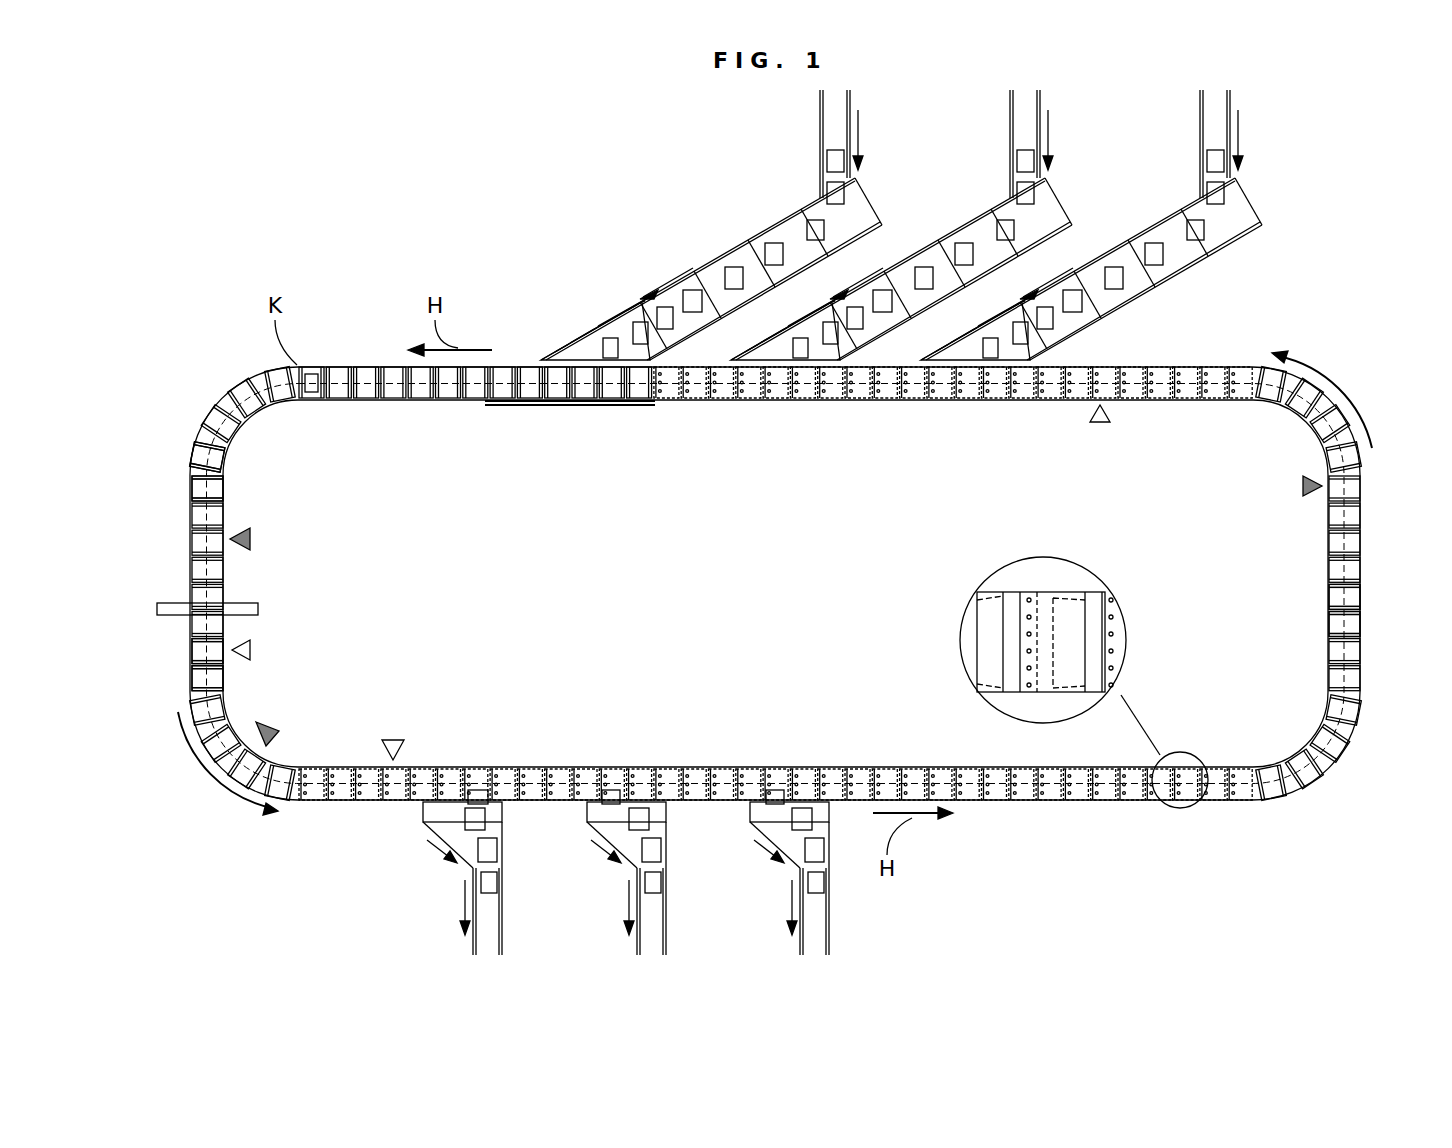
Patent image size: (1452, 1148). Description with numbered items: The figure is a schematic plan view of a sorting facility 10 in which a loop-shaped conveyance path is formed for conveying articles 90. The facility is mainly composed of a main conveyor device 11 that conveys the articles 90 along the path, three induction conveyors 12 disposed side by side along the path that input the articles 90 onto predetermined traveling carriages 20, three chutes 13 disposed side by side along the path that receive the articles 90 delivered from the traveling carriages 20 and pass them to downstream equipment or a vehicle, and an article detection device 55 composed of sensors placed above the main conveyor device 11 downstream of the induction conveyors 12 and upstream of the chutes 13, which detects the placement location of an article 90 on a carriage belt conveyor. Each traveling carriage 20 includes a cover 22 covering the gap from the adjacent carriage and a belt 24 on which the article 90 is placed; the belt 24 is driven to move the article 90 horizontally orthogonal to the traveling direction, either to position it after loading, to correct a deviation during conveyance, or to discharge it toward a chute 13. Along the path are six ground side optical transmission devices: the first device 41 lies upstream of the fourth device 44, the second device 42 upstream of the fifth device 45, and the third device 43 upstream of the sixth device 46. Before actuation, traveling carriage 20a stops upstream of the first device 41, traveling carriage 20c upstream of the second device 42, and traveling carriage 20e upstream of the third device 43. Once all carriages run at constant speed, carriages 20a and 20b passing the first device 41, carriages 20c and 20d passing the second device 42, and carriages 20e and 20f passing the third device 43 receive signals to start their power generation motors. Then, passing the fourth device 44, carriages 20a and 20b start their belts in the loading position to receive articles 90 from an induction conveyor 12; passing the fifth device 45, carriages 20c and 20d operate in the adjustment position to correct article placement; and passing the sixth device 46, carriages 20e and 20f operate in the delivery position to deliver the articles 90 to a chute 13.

The sorting facility 10 is at (257, 245).
The main conveyor device 11 is at (1052, 804).
The induction conveyor 12 is at (788, 200).
The chute 13 is at (462, 868).
The traveling carriage 20 is at (222, 392).
The traveling carriage 20a is at (1362, 598).
The traveling carriage 20b is at (1365, 630).
The traveling carriage 20c is at (193, 456).
The traveling carriage 20d is at (196, 420).
The traveling carriage 20e is at (190, 685).
The traveling carriage 20f is at (190, 650).
The cover 22 is at (1010, 600).
The belt 24 is at (1057, 686).
The first ground side optical transmission device 41 is at (1300, 488).
The second ground side optical transmission device 42 is at (241, 526).
The third ground side optical transmission device 43 is at (280, 735).
The fourth ground side optical transmission device 44 is at (1112, 420).
The fifth ground side optical transmission device 45 is at (252, 648).
The sixth ground side optical transmission device 46 is at (406, 742).
The article detection device 55 is at (176, 603).
The article 90 is at (637, 330).